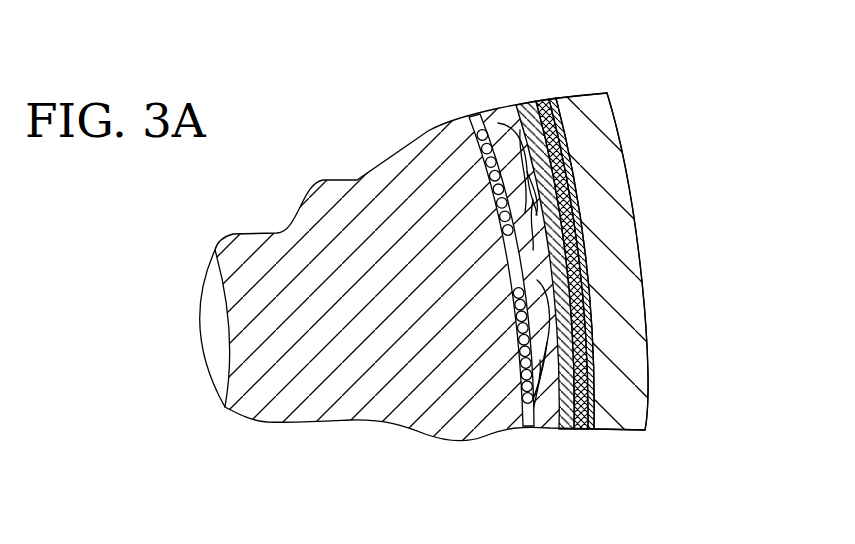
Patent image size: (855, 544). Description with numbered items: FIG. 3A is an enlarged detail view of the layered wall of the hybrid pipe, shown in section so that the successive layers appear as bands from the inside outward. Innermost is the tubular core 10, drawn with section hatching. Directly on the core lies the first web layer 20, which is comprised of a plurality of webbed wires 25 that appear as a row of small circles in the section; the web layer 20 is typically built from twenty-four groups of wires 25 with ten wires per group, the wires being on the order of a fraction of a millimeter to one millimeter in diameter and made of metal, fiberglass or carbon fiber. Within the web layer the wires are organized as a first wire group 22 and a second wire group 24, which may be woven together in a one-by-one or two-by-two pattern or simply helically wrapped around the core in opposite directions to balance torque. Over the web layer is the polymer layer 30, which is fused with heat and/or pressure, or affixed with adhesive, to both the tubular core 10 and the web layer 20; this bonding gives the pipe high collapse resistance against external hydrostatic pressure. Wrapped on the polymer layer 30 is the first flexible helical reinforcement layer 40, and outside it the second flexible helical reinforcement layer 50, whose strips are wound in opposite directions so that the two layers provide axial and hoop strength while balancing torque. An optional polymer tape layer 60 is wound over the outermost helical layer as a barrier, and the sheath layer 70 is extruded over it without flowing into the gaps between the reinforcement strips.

The tubular core 10 is at (338, 173).
The first web layer 20 is at (465, 126).
The first wire group 22 is at (528, 194).
The second wire group 24 is at (538, 358).
The wires 25 is at (502, 216).
The polymer layer 30 is at (481, 106).
The first flexible helical reinforcement layer 40 is at (513, 95).
The second flexible helical reinforcement layer 50 is at (537, 91).
The polymer tape layer 60 is at (554, 87).
The sheath layer 70 is at (601, 85).